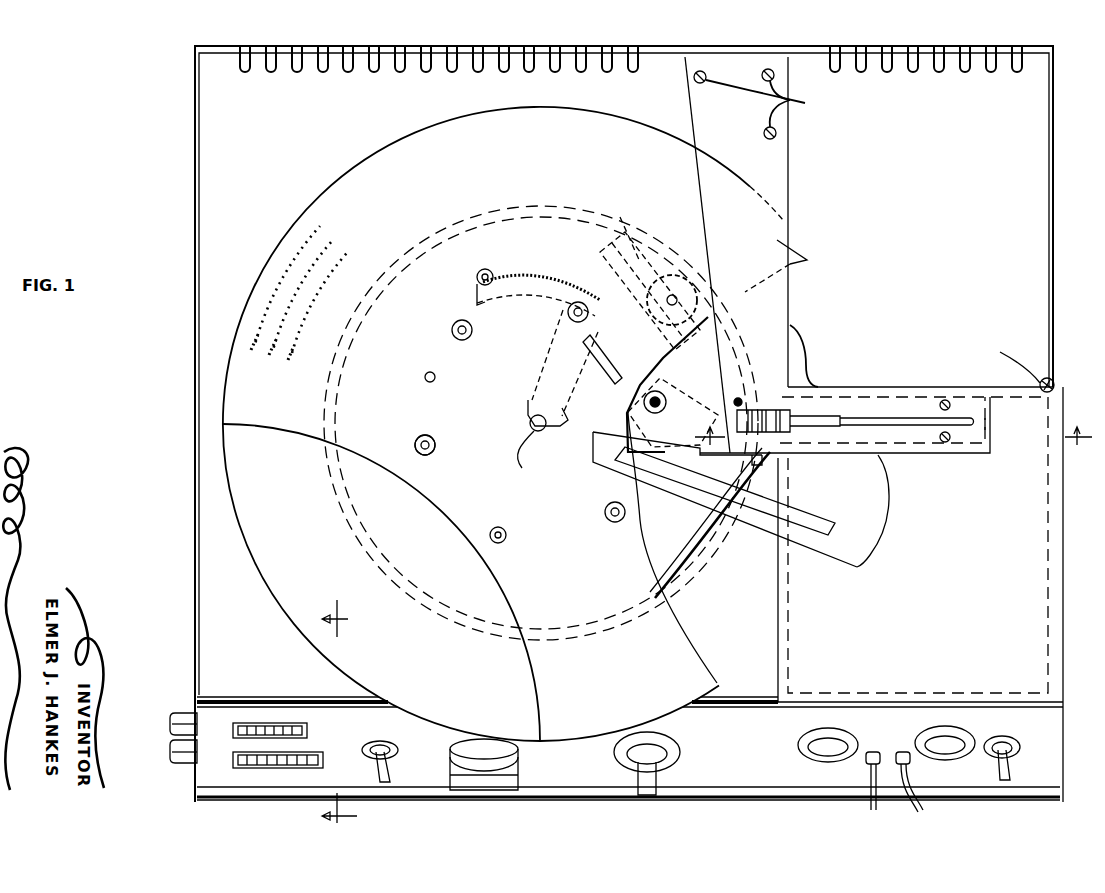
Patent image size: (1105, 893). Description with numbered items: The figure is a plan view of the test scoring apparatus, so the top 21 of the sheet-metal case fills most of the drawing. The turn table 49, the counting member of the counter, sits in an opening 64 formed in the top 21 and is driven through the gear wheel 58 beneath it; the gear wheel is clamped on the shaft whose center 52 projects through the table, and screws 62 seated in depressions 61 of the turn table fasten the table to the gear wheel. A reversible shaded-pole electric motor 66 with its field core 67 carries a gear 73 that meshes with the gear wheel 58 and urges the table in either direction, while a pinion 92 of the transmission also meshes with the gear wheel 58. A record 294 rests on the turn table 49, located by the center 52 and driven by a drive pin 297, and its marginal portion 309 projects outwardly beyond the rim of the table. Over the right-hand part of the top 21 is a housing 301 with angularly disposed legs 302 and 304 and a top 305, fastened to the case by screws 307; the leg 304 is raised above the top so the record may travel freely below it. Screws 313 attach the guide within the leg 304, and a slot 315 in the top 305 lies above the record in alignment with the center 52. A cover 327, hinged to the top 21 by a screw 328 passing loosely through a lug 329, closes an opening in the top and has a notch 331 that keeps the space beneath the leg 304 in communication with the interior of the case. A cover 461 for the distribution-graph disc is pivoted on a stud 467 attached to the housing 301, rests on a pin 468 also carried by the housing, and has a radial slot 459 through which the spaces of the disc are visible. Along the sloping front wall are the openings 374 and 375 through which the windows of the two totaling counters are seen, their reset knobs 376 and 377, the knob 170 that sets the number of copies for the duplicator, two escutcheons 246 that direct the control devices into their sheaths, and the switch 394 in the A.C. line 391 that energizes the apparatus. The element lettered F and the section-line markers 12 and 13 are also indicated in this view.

The top 21 is at (210, 113).
The record 294 is at (345, 179).
The marginal portion 309 is at (292, 573).
The turn table 49 is at (690, 540).
The opening 64 is at (683, 585).
The mounting panel F is at (780, 165).
The leg 302 is at (782, 190).
The top 305 is at (777, 240).
The housing 301 is at (783, 313).
The screws 307 is at (790, 100).
The gear wheel 58 is at (510, 276).
The pinion 92 is at (480, 274).
The field core 67 is at (612, 270).
The electric motor 66 is at (612, 215).
The gear 73 is at (648, 290).
The center 52 is at (524, 466).
The drive pin 297 is at (435, 378).
The depressions 61 is at (435, 440).
The screws 62 is at (435, 450).
The pin 468 is at (718, 500).
The radial slot 459 is at (815, 520).
The cover 461 is at (873, 520).
The leg 304 is at (962, 456).
The stud 467 is at (880, 456).
The slot 315 is at (888, 415).
The screws 313 is at (952, 402).
The notch 331 is at (987, 425).
The lug 329 is at (1043, 378).
The screw 328 is at (1003, 352).
The cover 327 is at (808, 595).
The section line 12 is at (893, 422).
The section line 13 is at (327, 713).
The knob 376 is at (178, 712).
The reset knob 377 is at (182, 766).
The opening 374 is at (284, 722).
The opening 375 is at (308, 755).
The switch 394 is at (395, 744).
The knob 170 is at (510, 766).
The escutcheons 246 is at (800, 740).
The A. C. line 391 is at (886, 750).